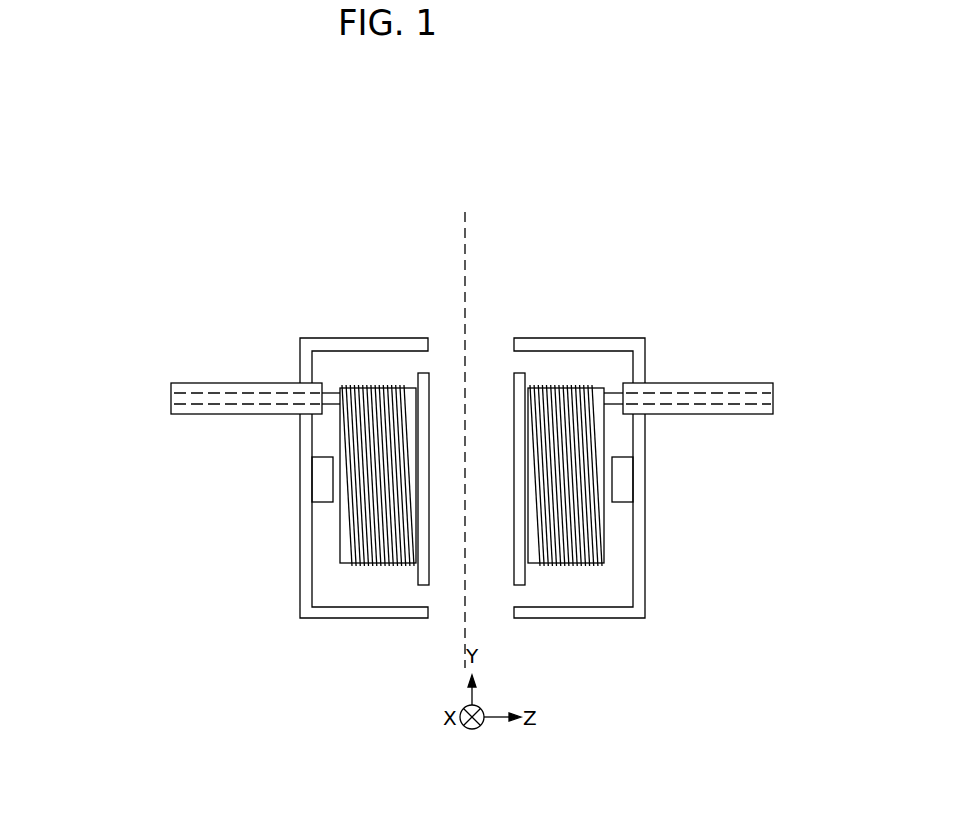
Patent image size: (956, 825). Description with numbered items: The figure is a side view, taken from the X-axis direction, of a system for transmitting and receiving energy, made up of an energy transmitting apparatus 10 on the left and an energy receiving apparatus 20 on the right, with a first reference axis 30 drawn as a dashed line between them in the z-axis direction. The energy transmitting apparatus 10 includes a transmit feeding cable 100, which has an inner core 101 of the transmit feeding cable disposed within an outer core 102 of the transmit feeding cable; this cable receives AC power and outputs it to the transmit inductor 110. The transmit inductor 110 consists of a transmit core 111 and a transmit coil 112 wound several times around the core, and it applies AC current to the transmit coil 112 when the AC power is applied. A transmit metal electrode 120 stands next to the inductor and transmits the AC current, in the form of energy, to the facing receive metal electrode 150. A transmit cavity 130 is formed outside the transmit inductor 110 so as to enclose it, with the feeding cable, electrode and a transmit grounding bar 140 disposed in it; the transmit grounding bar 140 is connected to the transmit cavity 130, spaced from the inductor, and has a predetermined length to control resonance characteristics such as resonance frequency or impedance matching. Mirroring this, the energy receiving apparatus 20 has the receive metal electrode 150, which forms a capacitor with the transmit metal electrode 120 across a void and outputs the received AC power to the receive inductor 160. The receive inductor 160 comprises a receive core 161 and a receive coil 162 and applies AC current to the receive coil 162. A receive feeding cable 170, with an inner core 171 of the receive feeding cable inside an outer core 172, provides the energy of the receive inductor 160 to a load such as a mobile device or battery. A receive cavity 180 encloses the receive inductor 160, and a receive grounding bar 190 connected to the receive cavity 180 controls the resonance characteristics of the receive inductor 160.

The energy transmitting apparatus 10 is at (247, 247).
The energy receiving apparatus 20 is at (663, 247).
The first reference axis 30 is at (466, 221).
The transmit feeding cable 100 is at (217, 410).
The inner core of the transmit feeding cable 101 is at (180, 398).
The outer core of the transmit feeding cable 102 is at (191, 388).
The transmit inductor 110 is at (332, 490).
The transmit core 111 is at (318, 423).
The transmit coil 112 is at (372, 388).
The transmit metal electrode 120 is at (429, 392).
The transmit cavity 130 is at (300, 341).
The transmit grounding bar 140 is at (322, 473).
The receive metal electrode 150 is at (514, 513).
The receive inductor 160 is at (611, 465).
The receive core 161 is at (628, 521).
The receive coil 162 is at (571, 566).
The receive feeding cable 170 is at (688, 396).
The inner core of the receive feeding cable 171 is at (736, 398).
The outer core of the receive feeding cable 172 is at (715, 382).
The receive cavity 180 is at (640, 338).
The receive grounding bar 190 is at (628, 488).